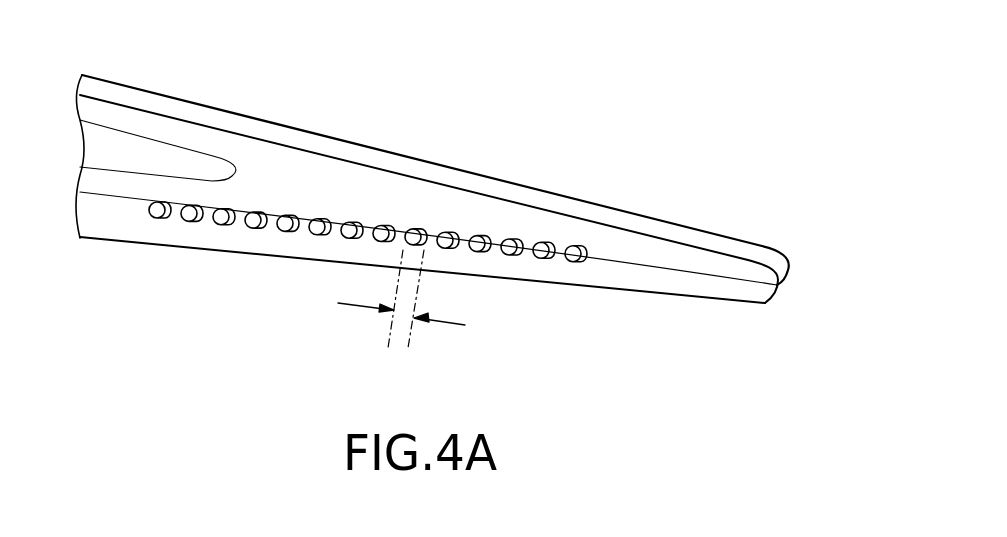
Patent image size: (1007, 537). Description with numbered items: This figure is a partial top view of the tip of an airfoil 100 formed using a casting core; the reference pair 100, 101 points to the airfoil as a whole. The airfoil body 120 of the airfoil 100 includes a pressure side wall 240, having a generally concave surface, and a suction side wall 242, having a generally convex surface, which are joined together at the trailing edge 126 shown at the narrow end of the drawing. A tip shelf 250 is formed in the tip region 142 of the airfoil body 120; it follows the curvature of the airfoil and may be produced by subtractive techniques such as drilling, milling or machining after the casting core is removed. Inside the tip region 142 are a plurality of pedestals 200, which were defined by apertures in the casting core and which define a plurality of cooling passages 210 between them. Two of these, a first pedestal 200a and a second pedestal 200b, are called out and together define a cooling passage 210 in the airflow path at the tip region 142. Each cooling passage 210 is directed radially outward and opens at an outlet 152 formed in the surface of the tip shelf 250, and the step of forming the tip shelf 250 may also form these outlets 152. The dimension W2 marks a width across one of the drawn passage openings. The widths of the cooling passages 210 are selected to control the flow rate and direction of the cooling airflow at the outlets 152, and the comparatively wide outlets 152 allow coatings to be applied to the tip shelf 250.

The airfoil 100 is at (749, 106).
The cable manager 101 is at (469, 194).
The airfoil body 120 is at (248, 160).
The trailing edge 126 is at (780, 287).
The tip region 142 is at (333, 201).
The outlet 152 is at (153, 215).
The pedestals 200 is at (568, 122).
The first pedestal 200a is at (465, 243).
The second pedestal 200b is at (500, 238).
The cooling passage 210 is at (248, 225).
The pressure side wall 240 is at (607, 288).
The suction side wall 242 is at (643, 217).
The tip shelf 250 is at (650, 281).
The aperture width W2 is at (352, 305).